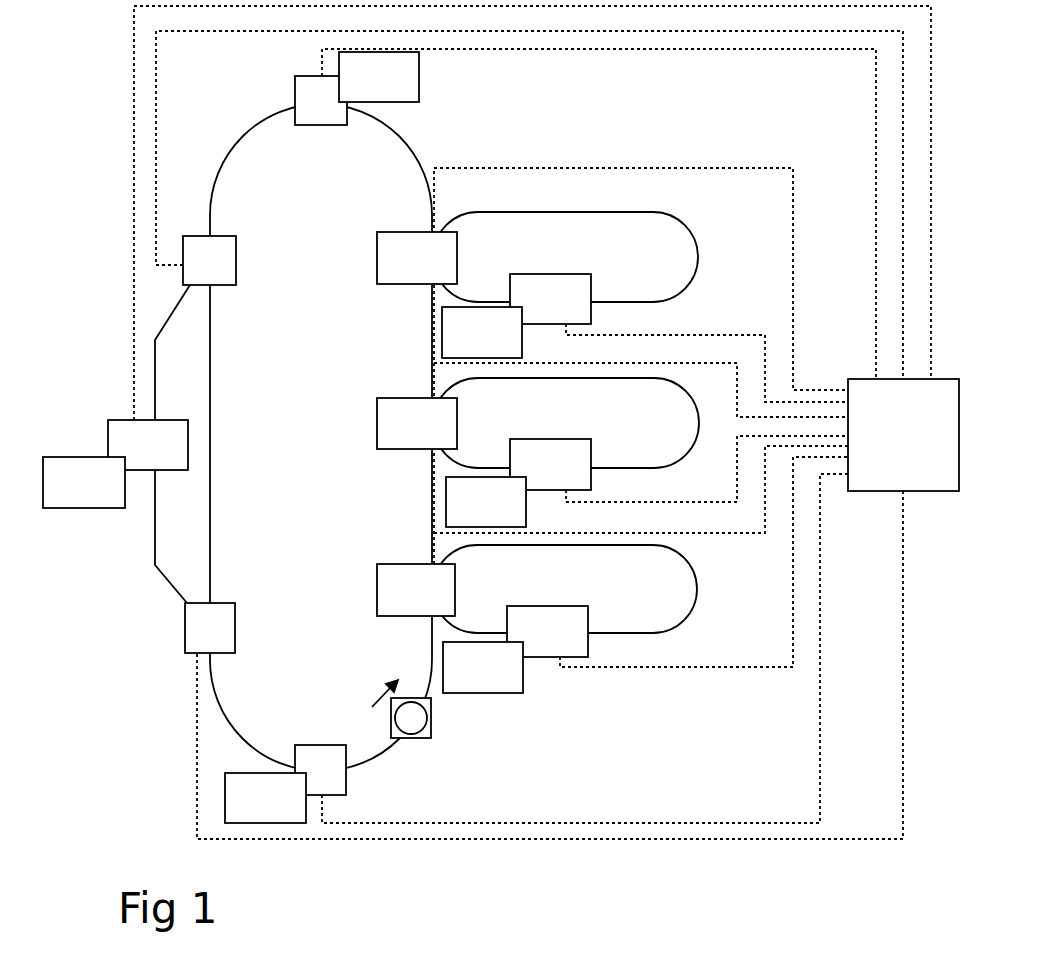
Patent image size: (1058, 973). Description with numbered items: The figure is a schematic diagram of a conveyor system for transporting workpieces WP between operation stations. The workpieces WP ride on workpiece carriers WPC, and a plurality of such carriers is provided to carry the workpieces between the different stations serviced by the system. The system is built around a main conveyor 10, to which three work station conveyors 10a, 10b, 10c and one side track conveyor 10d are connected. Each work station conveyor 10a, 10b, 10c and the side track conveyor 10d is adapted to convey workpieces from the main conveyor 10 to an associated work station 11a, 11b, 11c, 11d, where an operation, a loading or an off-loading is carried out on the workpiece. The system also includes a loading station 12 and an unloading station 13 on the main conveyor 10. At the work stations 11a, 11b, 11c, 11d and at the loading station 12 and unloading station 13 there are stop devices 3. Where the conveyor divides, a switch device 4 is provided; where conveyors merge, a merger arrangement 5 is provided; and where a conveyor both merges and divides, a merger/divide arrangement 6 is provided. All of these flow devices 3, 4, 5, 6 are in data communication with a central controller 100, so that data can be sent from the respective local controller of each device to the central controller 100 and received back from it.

The stop device 3 is at (313, 114).
The switch device 4 is at (202, 642).
The merger arrangement 5 is at (201, 274).
The merger/divide arrangement 6 is at (408, 603).
The main conveyor 10 is at (405, 137).
The work station conveyor 10a is at (697, 240).
The work station conveyor 10b is at (648, 470).
The work station conveyor 10c is at (697, 592).
The side track conveyor 10d is at (155, 565).
The work station 11a is at (460, 346).
The work station 11b is at (464, 515).
The work station 11c is at (461, 681).
The work station 11d is at (62, 496).
The loading station 12 is at (250, 811).
The unloading station 13 is at (364, 90).
The central controller 100 is at (881, 449).
The workpiece WP is at (413, 722).
The workpiece carrier WPC is at (432, 728).